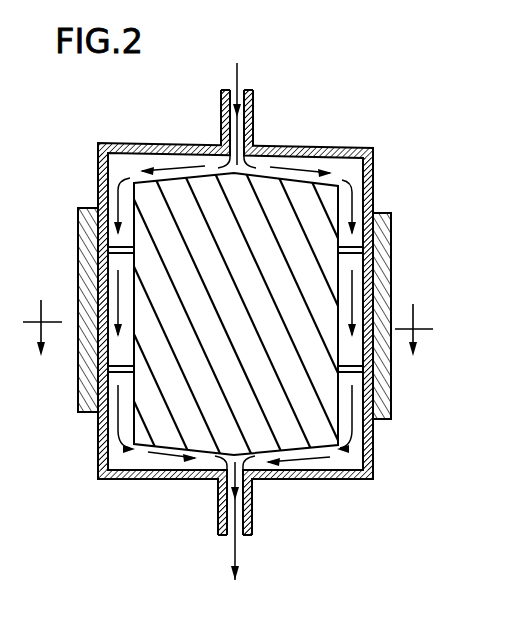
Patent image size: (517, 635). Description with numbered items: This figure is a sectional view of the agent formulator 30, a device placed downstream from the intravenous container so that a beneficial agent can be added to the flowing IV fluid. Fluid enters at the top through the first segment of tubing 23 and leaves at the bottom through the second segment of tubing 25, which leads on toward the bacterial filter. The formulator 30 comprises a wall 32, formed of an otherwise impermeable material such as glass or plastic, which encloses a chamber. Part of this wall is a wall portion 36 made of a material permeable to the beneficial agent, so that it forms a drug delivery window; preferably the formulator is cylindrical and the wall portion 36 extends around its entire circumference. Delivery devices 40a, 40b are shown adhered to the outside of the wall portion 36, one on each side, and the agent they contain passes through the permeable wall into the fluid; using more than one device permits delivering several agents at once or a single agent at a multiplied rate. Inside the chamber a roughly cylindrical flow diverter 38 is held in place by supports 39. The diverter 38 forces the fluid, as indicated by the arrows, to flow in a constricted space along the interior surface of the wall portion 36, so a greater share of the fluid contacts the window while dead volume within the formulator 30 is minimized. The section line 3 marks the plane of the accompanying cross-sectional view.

The agent formulator 30 is at (141, 122).
The wall 32 is at (97, 156).
The wall portion 36 is at (374, 190).
The first segment of tubing 23 is at (253, 107).
The second segment of tubing 25 is at (252, 525).
The flow diverter 38 is at (210, 168).
The supports 39 is at (117, 358).
The delivery device 40a is at (75, 226).
The delivery device 40b is at (398, 240).
The section line for FIG. 3 is at (228, 309).